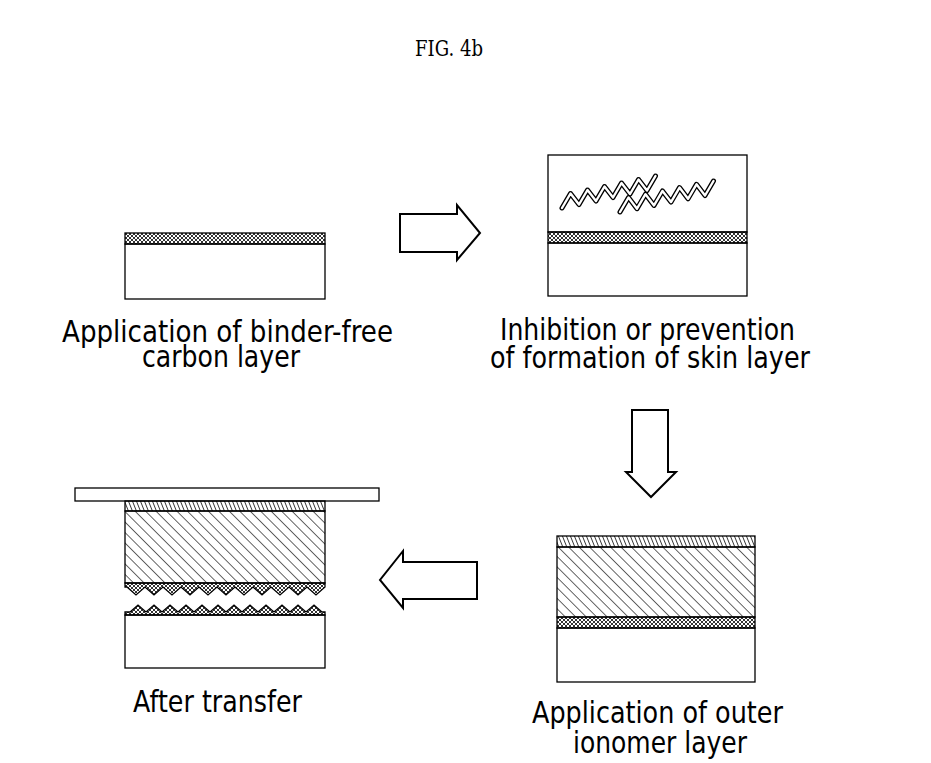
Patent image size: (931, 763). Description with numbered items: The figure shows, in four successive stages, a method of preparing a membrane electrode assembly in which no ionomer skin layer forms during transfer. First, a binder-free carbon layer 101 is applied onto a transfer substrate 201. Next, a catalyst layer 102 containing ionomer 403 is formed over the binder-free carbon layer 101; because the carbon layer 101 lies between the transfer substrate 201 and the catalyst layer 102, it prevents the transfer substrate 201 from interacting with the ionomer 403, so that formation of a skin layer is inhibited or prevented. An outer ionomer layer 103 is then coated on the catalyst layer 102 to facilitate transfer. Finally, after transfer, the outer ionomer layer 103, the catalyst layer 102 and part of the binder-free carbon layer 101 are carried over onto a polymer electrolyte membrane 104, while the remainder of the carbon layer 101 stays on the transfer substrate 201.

The binder-free carbon layer 101 is at (125, 238).
The catalyst layer 102 is at (548, 180).
The outer ionomer layer 103 is at (125, 507).
The polymer electrolyte membrane 104 is at (197, 492).
The transfer substrate 201 is at (135, 275).
The ionomer 403 is at (716, 182).